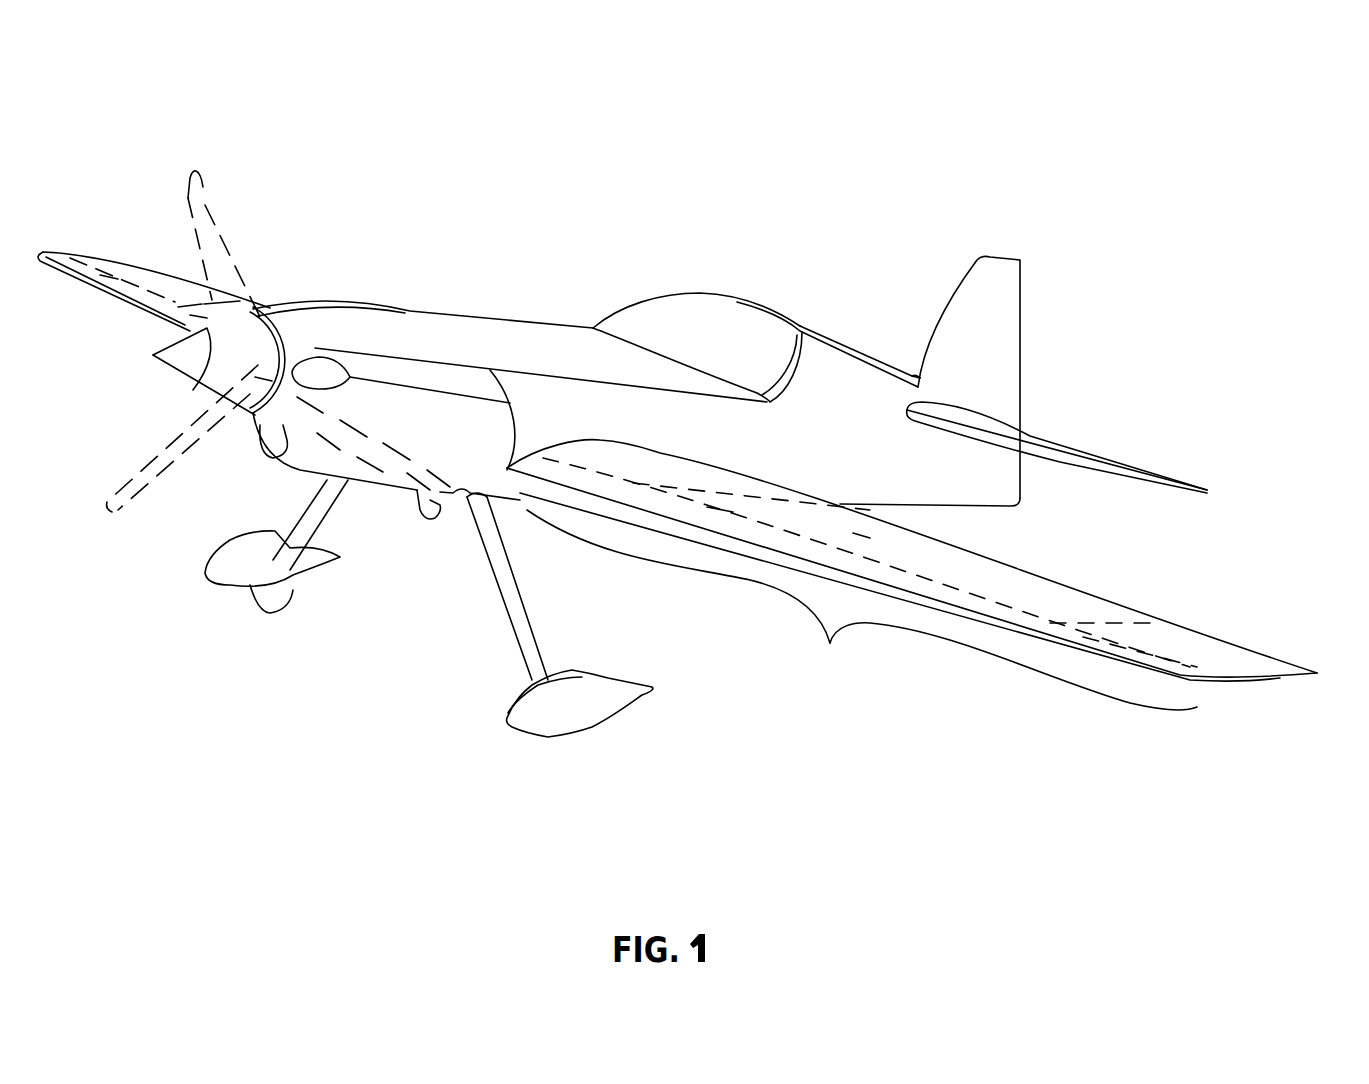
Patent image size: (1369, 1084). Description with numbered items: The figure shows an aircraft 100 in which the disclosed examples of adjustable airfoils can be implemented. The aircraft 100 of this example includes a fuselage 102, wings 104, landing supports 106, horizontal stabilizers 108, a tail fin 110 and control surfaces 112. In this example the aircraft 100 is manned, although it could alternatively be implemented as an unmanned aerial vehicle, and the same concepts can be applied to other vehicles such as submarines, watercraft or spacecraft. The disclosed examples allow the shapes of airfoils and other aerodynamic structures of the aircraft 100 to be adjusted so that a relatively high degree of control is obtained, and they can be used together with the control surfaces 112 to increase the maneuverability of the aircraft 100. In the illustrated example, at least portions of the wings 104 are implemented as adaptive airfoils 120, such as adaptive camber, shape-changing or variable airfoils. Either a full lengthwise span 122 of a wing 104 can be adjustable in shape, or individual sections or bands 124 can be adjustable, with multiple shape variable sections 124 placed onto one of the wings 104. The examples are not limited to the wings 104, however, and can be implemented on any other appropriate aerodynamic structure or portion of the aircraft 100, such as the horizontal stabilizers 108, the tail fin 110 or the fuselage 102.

The aircraft 100 is at (1147, 82).
The fuselage 102 is at (567, 340).
The wings 104 is at (50, 222).
The landing supports 106 is at (303, 567).
The horizontal stabilizers 108 is at (1070, 447).
The tail fin 110 is at (997, 283).
The control surfaces 112 is at (1043, 440).
The adaptive airfoils 120 is at (150, 273).
The full lengthwise span 122 is at (830, 643).
The shape variable sections 124 is at (783, 486).